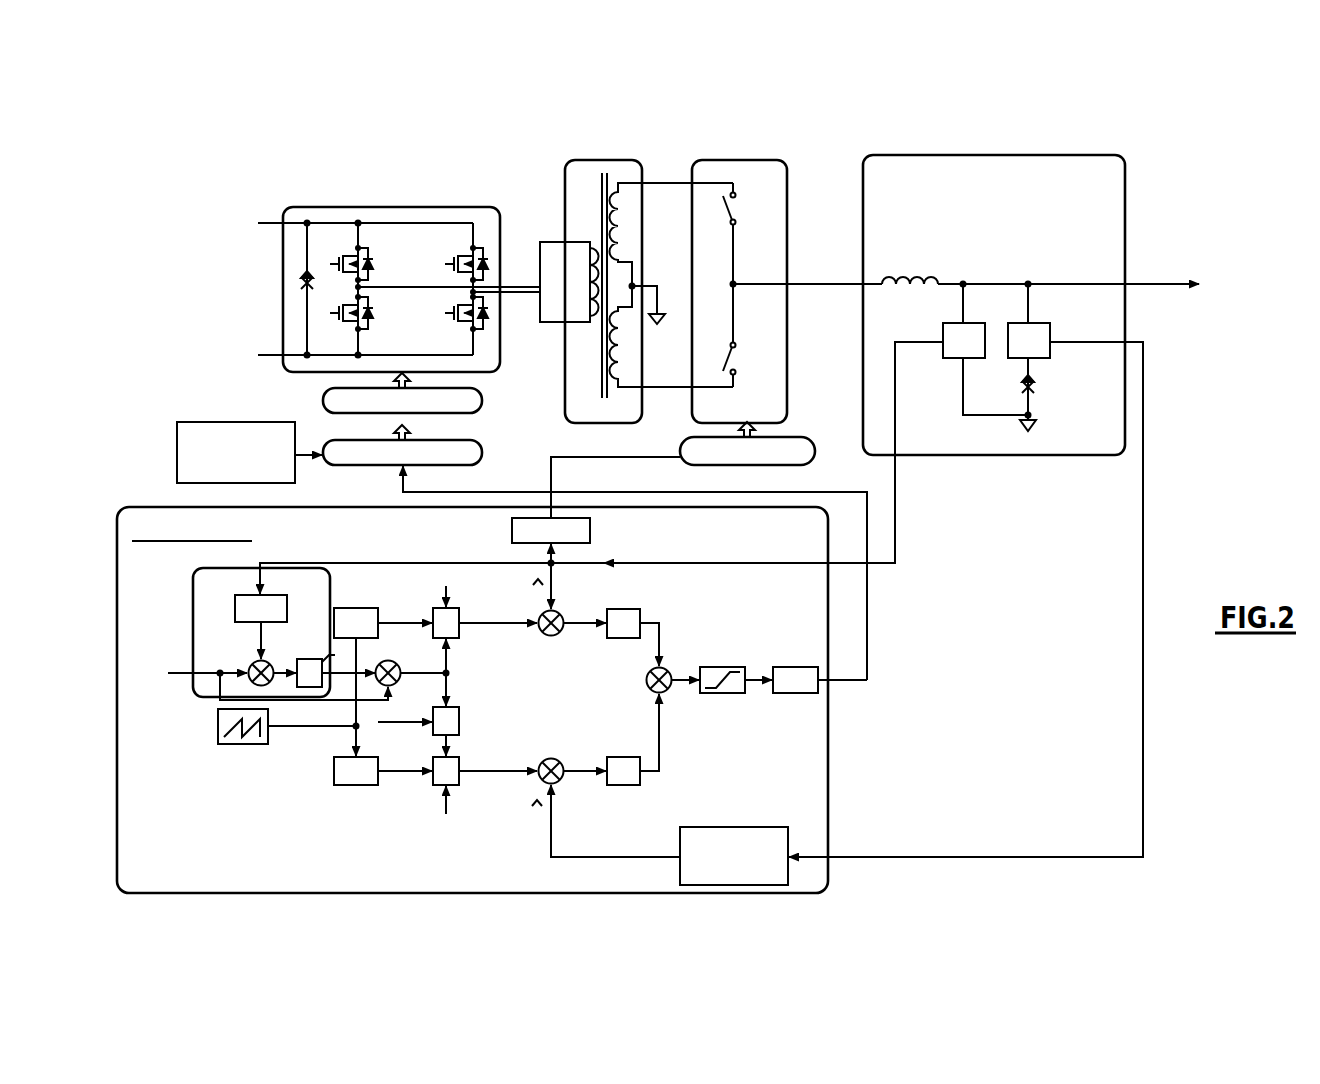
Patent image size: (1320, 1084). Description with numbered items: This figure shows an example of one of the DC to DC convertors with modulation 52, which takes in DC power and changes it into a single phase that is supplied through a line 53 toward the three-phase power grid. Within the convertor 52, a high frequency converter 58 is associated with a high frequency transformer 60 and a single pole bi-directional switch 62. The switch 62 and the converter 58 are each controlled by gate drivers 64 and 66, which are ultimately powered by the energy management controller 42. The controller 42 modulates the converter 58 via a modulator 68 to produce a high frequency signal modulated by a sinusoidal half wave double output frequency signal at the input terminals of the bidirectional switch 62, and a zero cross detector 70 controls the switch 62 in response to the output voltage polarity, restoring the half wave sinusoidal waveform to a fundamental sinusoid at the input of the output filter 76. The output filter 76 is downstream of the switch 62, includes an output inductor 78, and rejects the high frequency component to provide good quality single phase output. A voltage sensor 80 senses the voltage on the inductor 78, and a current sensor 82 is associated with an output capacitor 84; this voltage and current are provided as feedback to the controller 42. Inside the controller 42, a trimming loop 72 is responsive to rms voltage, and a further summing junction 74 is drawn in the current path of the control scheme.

The energy management controller 42 is at (807, 782).
The DC to DC convertor with modulation 52 is at (257, 169).
The line 53 is at (1137, 283).
The high frequency converter 58 is at (460, 207).
The high frequency transformer 60 is at (627, 165).
The single pole bi-directional switch 62 is at (770, 165).
The gate driver 64 is at (800, 438).
The gate driver 66 is at (483, 402).
The modulator 68 is at (483, 453).
The zero cross detector 70 is at (512, 528).
The trimming loop 72 is at (220, 600).
The current summing junction 74 is at (552, 757).
The output filter 76 is at (865, 217).
The output inductor 78 is at (938, 273).
The voltage sensor 80 is at (947, 360).
The current sensor 82 is at (1050, 327).
The output capacitor 84 is at (1022, 387).